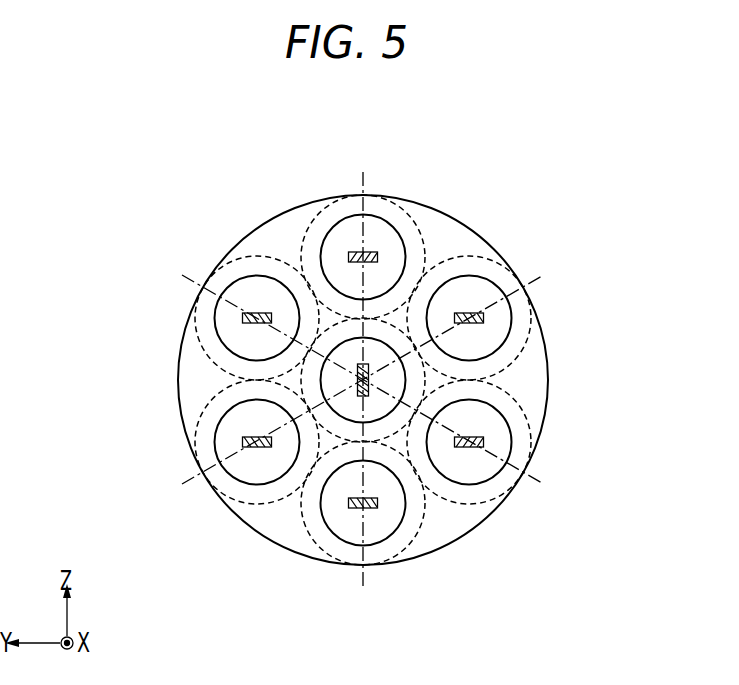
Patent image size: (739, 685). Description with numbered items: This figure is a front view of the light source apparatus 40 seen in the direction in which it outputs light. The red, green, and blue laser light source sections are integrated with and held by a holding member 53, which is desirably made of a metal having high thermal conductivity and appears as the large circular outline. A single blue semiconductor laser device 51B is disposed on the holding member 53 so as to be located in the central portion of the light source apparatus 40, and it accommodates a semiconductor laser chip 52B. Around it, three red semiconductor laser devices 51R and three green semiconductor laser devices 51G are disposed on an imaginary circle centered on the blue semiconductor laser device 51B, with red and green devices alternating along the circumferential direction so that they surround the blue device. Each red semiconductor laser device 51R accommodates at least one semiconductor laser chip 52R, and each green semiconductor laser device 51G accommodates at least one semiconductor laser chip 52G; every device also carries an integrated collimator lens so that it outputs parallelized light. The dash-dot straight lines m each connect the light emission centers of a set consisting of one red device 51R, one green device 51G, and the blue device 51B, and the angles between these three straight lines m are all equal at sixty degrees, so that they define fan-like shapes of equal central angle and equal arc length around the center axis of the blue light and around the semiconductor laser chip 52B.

The light source apparatus 40 is at (458, 194).
The holding member 53 is at (302, 546).
The straight line m is at (194, 270).
The green semiconductor laser device 51G is at (334, 193).
The semiconductor laser chip 52G is at (350, 251).
The red semiconductor laser device 51R is at (192, 295).
The semiconductor laser chip 52R is at (245, 320).
The blue semiconductor laser device 51B is at (411, 392).
The semiconductor laser chip 52B is at (369, 377).